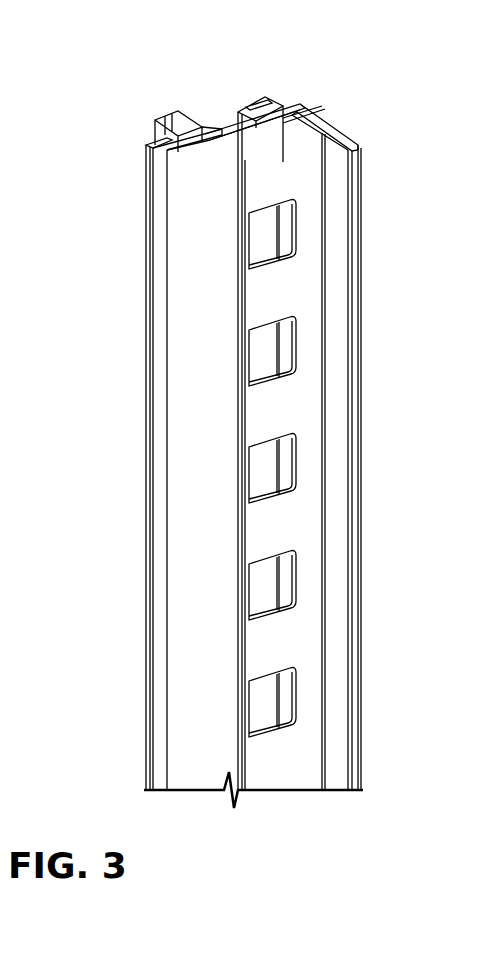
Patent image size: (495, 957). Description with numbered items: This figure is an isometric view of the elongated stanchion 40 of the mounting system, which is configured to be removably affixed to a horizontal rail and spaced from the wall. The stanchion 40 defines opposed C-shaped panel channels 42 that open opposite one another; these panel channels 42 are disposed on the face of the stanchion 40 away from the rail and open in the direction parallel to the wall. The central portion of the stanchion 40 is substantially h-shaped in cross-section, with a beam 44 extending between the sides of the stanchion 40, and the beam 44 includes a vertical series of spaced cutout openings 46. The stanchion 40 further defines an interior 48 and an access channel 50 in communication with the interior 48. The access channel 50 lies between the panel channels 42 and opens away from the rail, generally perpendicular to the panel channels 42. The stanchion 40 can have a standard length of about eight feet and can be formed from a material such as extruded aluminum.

The stanchion 40 is at (347, 125).
The panel channels 42 is at (260, 137).
The beam 44 is at (277, 124).
The cutout openings 46 is at (298, 333).
The interior 48 is at (212, 136).
The access channel 50 is at (198, 113).